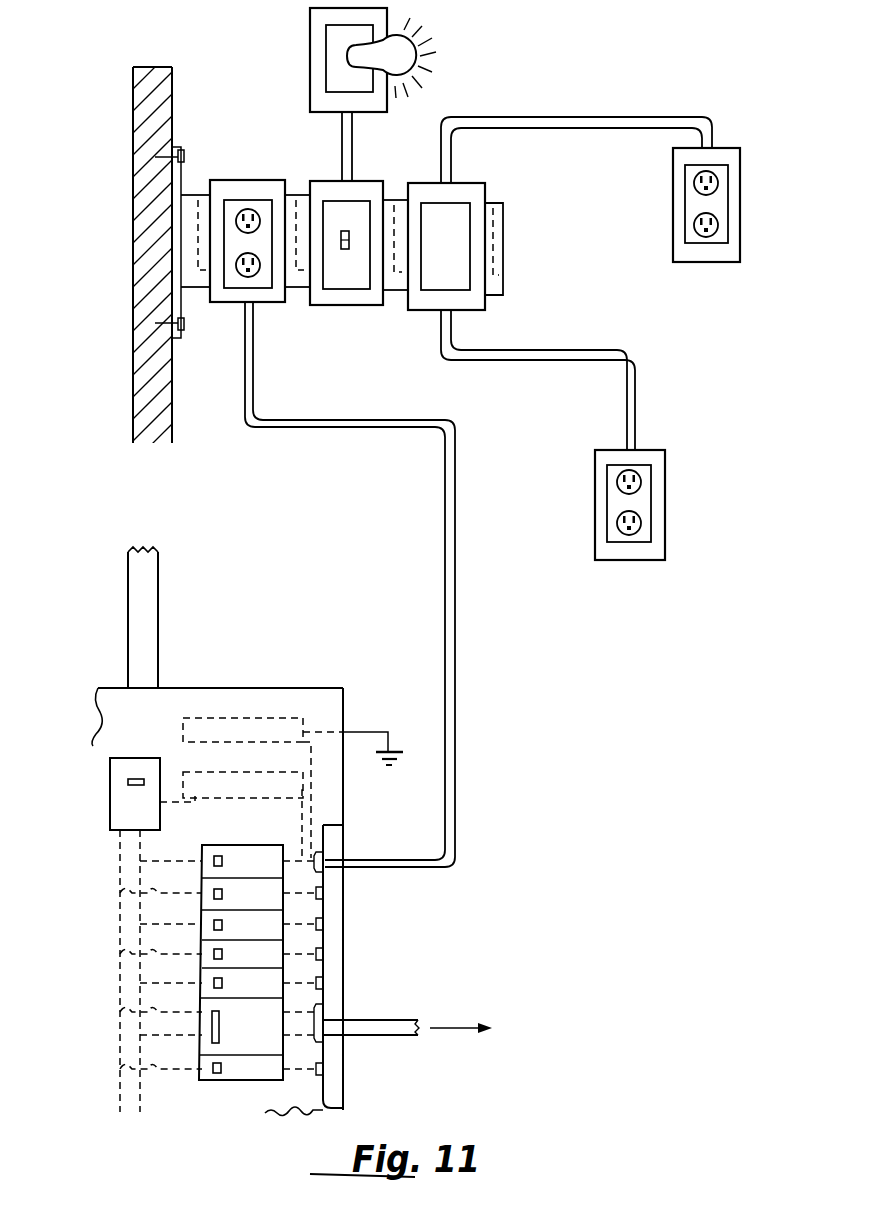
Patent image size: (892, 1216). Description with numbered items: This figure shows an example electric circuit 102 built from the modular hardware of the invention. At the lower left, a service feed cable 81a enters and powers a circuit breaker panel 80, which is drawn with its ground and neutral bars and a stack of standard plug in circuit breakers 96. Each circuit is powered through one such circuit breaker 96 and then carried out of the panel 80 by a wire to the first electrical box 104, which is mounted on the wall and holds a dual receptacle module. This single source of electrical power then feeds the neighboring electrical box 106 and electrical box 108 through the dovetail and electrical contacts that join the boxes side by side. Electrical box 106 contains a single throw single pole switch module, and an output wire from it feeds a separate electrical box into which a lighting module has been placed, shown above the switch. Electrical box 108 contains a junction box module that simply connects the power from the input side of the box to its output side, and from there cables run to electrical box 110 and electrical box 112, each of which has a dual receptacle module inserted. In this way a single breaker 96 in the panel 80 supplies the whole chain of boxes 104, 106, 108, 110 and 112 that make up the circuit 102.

The electric circuit 102 is at (656, 57).
The electrical box 104 is at (237, 182).
The electrical box 106 is at (365, 182).
The electrical box 108 is at (473, 187).
The electrical box 110 is at (736, 207).
The electrical box 112 is at (660, 476).
The circuit breaker panel 80 is at (268, 698).
The service feed cable 81a is at (122, 603).
The circuit breaker 96 is at (243, 845).